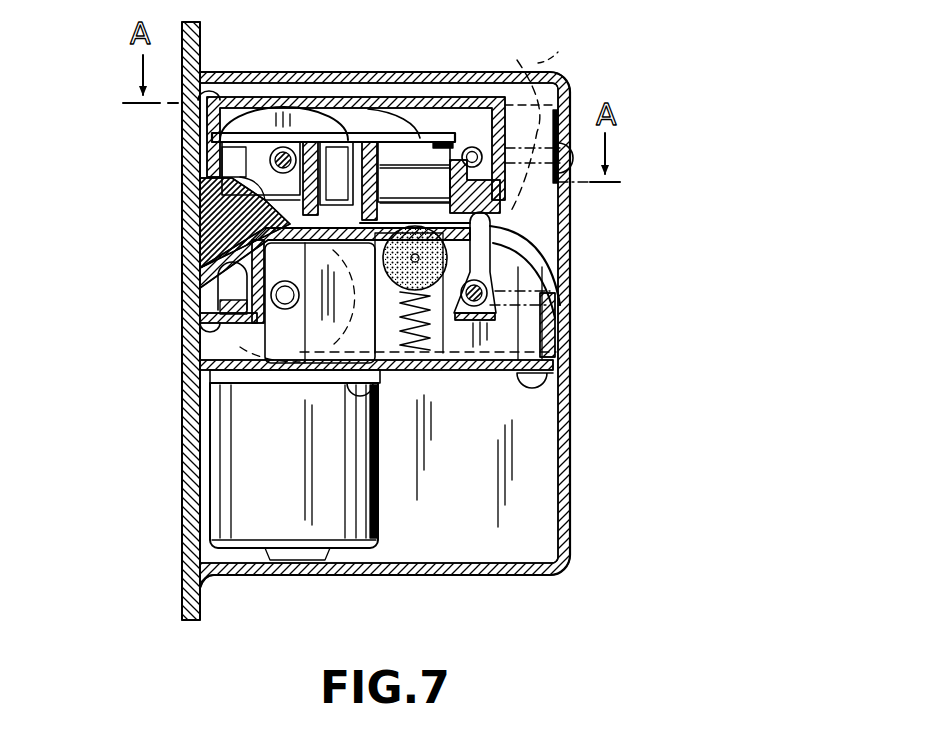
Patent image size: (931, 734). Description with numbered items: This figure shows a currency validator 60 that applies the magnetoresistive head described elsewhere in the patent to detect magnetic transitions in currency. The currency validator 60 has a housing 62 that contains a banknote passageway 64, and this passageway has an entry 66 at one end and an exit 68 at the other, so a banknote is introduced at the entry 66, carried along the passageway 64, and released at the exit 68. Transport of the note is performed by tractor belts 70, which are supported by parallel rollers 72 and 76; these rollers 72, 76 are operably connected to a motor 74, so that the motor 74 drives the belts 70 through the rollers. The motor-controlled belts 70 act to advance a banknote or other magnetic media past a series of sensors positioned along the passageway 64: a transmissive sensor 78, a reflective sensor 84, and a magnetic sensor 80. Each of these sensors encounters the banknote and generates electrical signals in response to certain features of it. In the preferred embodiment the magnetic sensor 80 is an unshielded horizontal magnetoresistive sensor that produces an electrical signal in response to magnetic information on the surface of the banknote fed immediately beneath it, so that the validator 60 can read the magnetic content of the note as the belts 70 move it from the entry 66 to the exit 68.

The currency validator 60 is at (374, 318).
The housing 62 is at (573, 447).
The banknote passageway 64 is at (162, 279).
The entry 66 is at (200, 268).
The exit 68 is at (563, 268).
The tractor belts 70 is at (358, 357).
The rollers 72 is at (188, 357).
The motor 74 is at (220, 473).
The rollers 76 is at (252, 116).
The transmissive sensor 78 is at (212, 210).
The magnetic sensor 80 is at (440, 146).
The reflective sensor 84 is at (333, 138).